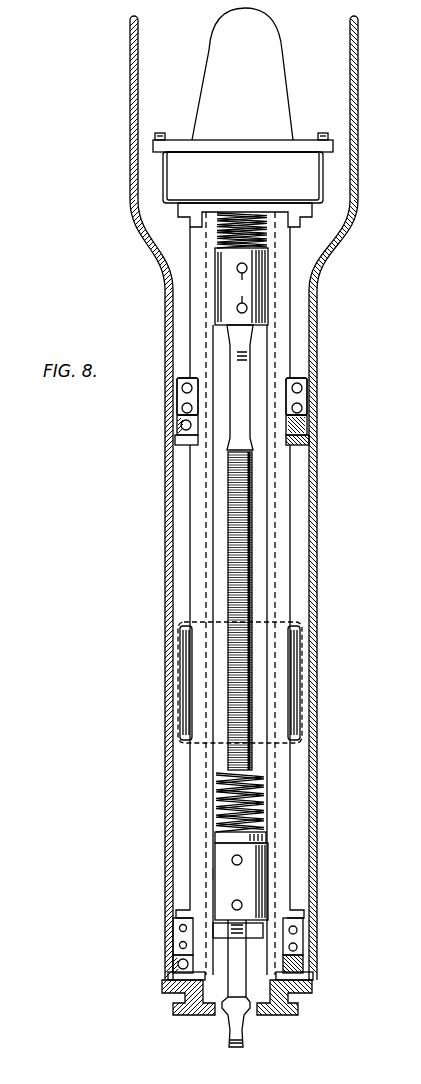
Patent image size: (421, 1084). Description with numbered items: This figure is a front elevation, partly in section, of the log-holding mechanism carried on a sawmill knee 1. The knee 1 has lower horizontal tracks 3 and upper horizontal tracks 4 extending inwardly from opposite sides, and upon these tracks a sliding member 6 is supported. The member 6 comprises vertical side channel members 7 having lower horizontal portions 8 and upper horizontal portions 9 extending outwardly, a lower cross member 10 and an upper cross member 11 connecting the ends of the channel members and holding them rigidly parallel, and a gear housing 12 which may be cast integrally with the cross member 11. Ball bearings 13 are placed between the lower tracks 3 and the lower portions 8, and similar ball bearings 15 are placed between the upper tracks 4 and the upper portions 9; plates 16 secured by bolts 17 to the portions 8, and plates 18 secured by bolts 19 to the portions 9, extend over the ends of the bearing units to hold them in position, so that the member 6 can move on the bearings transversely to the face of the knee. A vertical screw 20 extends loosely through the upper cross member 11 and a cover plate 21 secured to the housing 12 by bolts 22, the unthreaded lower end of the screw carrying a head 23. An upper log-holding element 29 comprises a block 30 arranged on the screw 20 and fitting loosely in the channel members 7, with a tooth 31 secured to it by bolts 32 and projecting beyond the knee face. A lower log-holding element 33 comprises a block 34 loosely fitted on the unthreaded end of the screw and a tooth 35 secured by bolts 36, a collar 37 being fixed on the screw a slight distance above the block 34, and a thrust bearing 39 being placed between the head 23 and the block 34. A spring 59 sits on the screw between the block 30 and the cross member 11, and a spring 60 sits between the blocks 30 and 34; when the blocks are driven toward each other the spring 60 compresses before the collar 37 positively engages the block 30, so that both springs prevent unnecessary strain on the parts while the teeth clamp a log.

The knee 1 is at (316, 330).
The lower horizontal tracks 3 is at (170, 976).
The upper horizontal tracks 4 is at (176, 440).
The member 6 is at (190, 542).
The vertical side channel members 7 is at (195, 585).
The lower horizontal portions 8 is at (178, 906).
The upper horizontal portions 9 is at (185, 372).
The lower cross member 10 is at (258, 972).
The upper cross member 11 is at (212, 213).
The gear housing 12 is at (324, 180).
The ball bearings 13 is at (178, 965).
The ball bearings 15 is at (178, 425).
The plates 16 is at (303, 947).
The bolts 17 is at (303, 928).
The plates 18 is at (177, 392).
The bolts 19 is at (193, 407).
The vertical screw 20 is at (230, 505).
The cover plate 21 is at (252, 140).
The bolts 22 is at (171, 128).
The head 23 is at (258, 939).
The upper log-holding element 29 is at (265, 285).
The block 30 is at (222, 281).
The log-engaging portion or tooth 31 is at (232, 361).
The bolts 32 is at (241, 303).
The lower log-holding element 33 is at (241, 881).
The block 34 is at (215, 876).
The log-engaging portion or tooth 35 is at (240, 1032).
The bolts 36 is at (246, 900).
The collar 37 is at (266, 838).
The thrust bearing 39 is at (213, 924).
The spring 59 is at (270, 242).
The spring 60 is at (215, 772).